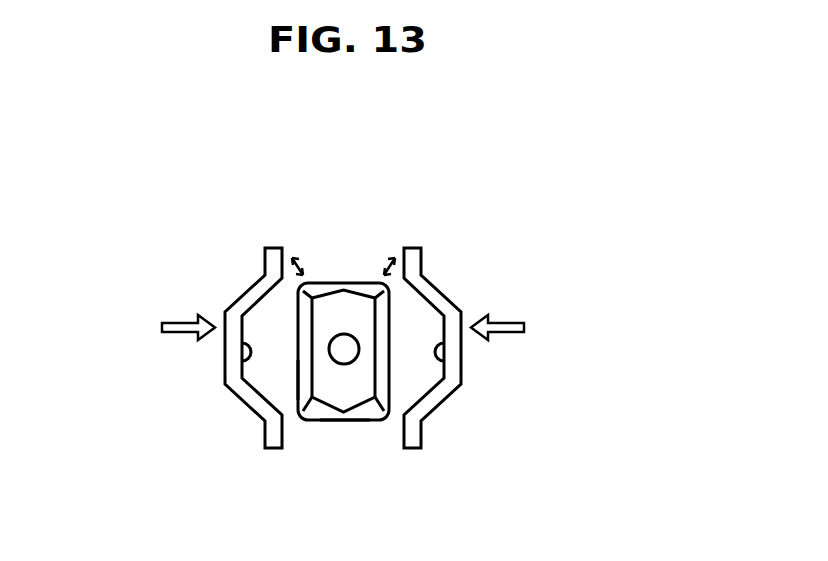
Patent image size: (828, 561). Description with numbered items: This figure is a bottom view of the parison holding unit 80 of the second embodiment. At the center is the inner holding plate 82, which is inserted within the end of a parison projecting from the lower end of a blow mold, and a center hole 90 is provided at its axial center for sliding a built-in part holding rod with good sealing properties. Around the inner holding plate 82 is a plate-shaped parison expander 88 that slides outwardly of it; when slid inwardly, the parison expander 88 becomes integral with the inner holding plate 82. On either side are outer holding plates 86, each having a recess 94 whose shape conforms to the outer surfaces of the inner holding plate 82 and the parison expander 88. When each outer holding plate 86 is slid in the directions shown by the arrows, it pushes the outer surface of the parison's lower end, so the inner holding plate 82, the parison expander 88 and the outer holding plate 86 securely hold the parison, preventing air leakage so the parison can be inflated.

The parison holding unit 80 is at (399, 235).
The inner holding plate 82 is at (335, 309).
The outer holding plate 86 is at (240, 295).
The parison expander 88 is at (298, 384).
The center hole 90 is at (345, 348).
The recess 94 is at (250, 362).